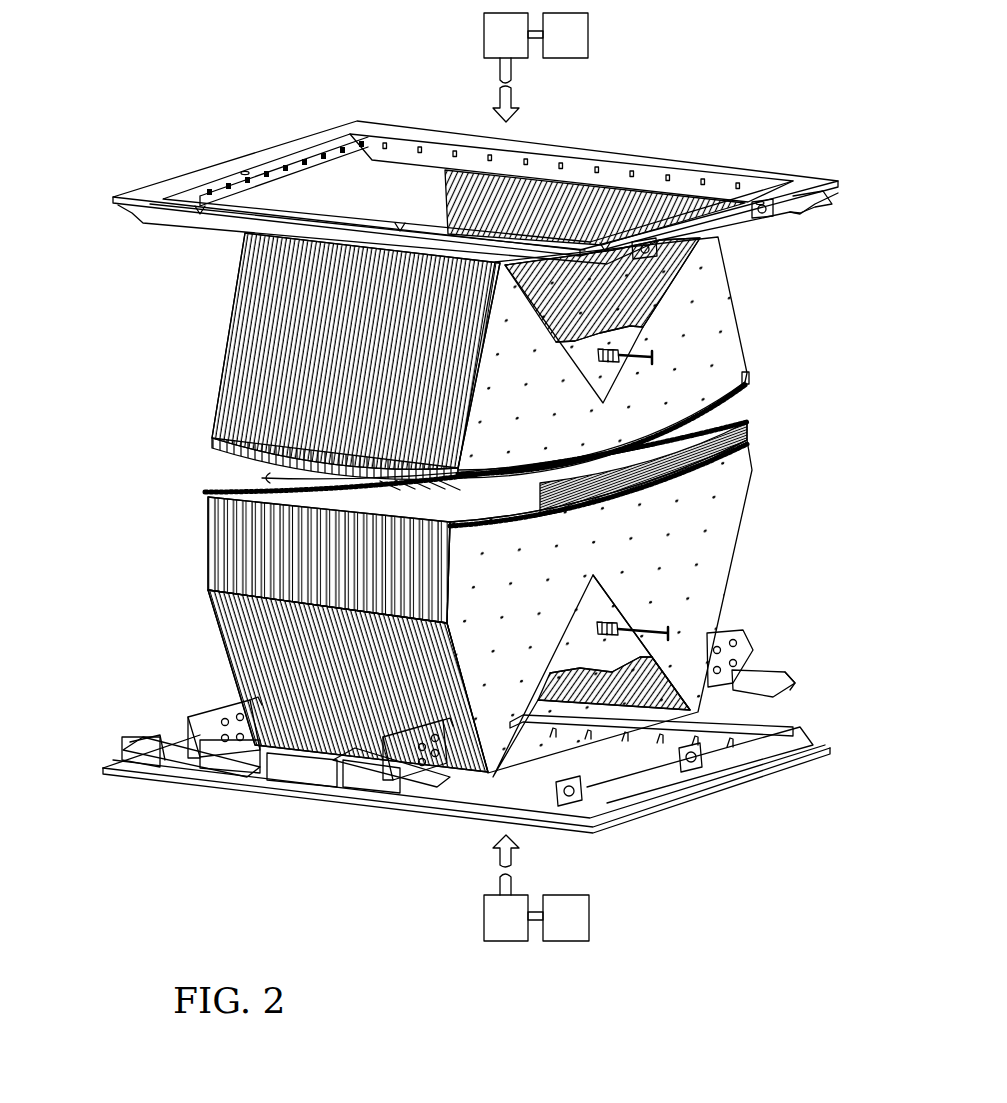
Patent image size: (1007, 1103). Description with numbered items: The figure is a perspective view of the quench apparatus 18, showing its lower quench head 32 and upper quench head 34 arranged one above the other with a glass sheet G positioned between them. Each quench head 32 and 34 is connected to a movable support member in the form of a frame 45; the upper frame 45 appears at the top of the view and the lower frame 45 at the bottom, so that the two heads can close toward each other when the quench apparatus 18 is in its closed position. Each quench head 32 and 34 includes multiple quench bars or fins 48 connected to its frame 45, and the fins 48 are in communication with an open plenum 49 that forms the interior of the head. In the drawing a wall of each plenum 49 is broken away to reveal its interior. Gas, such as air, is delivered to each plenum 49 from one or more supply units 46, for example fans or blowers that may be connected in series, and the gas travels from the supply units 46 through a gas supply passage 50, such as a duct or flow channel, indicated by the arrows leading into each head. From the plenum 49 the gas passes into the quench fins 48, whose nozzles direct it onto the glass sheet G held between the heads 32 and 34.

The quench apparatus 18 is at (92, 188).
The upper quench head 34 is at (141, 273).
The lower quench head 32 is at (178, 680).
The frame 45 is at (817, 173).
The supply unit 46 is at (517, 46).
The quench fin 48 is at (225, 348).
The open plenum 49 is at (636, 285).
The gas supply passage 50 is at (497, 72).
The glass sheet G is at (260, 482).